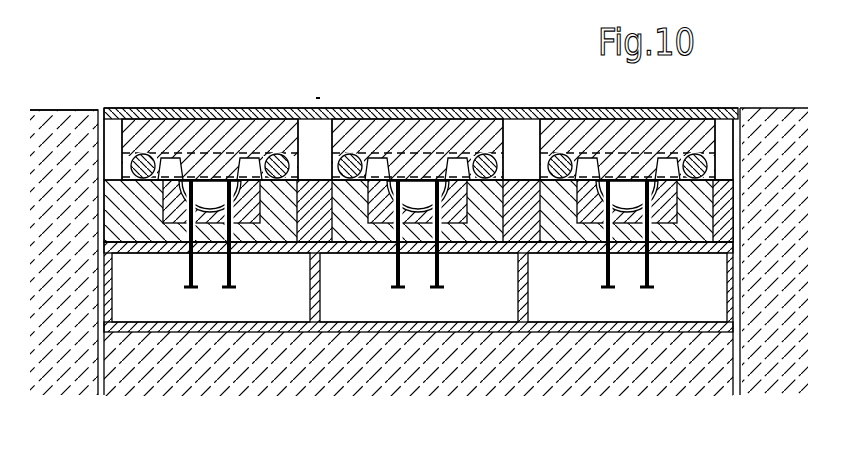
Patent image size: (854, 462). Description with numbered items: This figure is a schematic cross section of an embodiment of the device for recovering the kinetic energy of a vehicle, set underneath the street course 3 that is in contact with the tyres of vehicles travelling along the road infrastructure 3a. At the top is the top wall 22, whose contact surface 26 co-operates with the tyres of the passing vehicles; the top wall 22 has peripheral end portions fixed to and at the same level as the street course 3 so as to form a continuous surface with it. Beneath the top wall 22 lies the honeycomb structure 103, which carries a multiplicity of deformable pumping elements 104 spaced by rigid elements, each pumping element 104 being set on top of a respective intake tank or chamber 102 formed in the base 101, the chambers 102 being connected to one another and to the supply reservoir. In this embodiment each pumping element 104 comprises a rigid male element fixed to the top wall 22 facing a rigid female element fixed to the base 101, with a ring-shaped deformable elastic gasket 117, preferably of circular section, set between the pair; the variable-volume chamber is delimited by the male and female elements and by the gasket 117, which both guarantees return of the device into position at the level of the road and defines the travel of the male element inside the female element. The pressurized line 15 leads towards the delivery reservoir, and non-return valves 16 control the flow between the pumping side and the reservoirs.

The street course 3 is at (75, 108).
The road infrastructure 3a is at (48, 97).
The base 101 is at (133, 243).
The honeycomb structure 103 is at (728, 143).
The deformable pumping element 104 is at (222, 113).
The contact surface 26 is at (433, 105).
The top wall 22 is at (375, 113).
The pressurized line 15 is at (475, 155).
The deformable elastic gasket 117 is at (141, 155).
The non-return valve 16 is at (492, 225).
The intake tank or chamber 102 is at (282, 300).